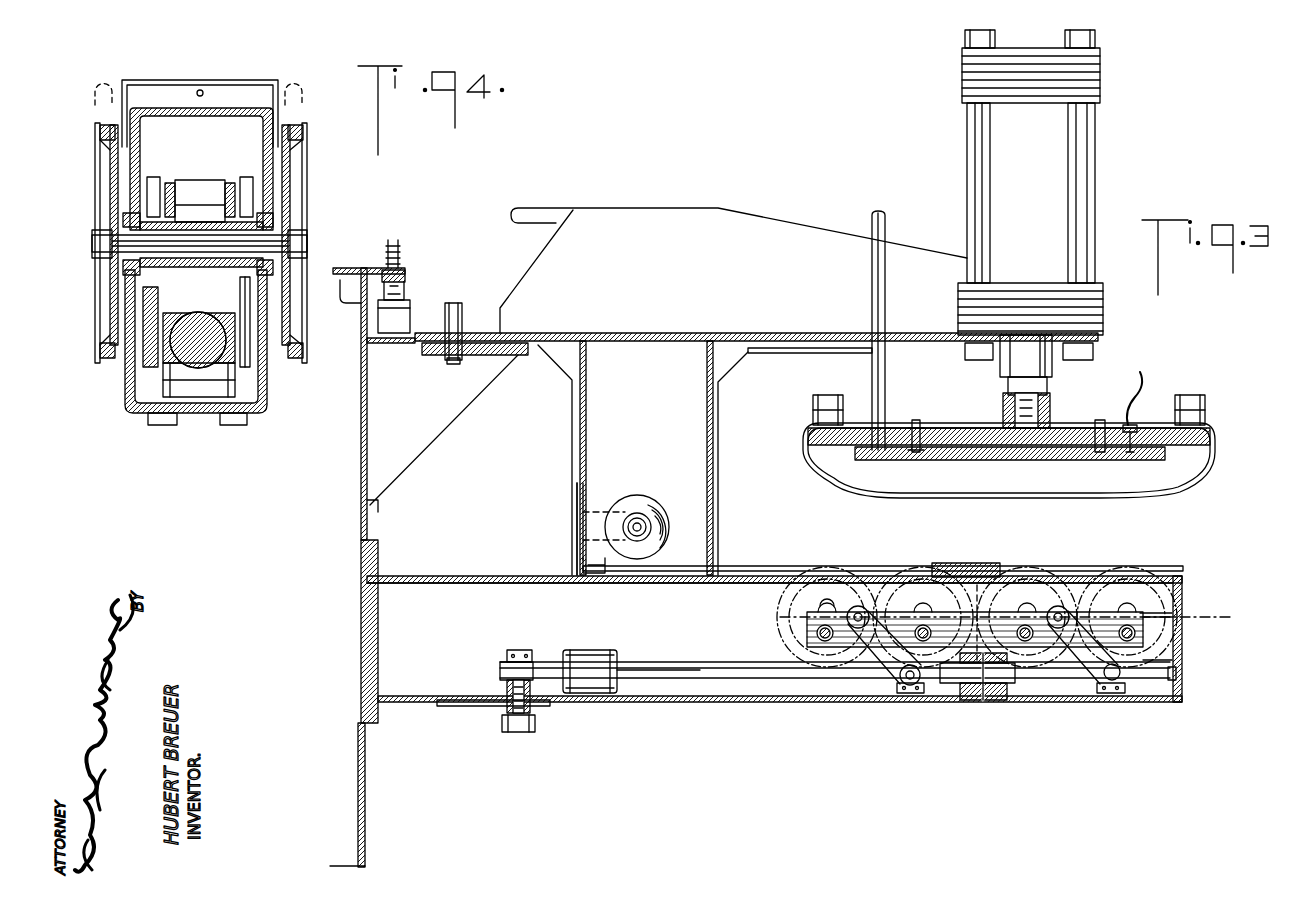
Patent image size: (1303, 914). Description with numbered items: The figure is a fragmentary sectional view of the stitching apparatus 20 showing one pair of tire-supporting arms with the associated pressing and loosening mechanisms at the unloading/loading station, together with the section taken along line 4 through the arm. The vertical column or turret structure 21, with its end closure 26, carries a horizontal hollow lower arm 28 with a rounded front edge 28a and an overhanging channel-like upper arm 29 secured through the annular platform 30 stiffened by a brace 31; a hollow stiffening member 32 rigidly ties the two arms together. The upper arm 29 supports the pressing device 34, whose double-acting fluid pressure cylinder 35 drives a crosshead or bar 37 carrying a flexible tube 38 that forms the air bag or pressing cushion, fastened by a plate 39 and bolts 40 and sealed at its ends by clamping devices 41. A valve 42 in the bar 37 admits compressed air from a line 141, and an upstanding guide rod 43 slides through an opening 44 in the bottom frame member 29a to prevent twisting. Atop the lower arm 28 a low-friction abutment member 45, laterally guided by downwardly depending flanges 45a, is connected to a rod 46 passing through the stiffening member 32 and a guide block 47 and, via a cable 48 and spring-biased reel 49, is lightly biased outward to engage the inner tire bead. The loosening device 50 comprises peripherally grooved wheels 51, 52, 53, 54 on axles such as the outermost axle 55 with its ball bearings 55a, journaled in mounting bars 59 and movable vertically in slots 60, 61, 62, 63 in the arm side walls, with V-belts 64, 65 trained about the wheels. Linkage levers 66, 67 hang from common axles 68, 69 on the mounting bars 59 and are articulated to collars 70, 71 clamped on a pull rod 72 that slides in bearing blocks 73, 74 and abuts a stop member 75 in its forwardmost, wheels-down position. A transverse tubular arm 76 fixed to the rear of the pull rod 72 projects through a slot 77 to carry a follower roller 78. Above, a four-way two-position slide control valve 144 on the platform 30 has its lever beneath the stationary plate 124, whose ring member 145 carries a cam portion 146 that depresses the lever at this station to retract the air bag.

In FIG. 3, the stitching apparatus 20 is at (797, 448).
In FIG. 3, the vertical column or turret structure 21 is at (366, 791).
In FIG. 3, the end closure 26 is at (346, 404).
In FIG. 4, the lower arm 28 is at (199, 416).
In FIG. 3, the lower arm 28 is at (748, 702).
In FIG. 3, the rounded front edge 28a is at (1184, 578).
In FIG. 3, the upper arm 29 is at (783, 231).
In FIG. 3, the bottom frame member 29a is at (652, 333).
In FIG. 3, the annular platform 30 is at (498, 354).
In FIG. 3, the brace 31 is at (410, 450).
In FIG. 3, the hollow stiffening member 32 is at (713, 488).
In FIG. 3, the pressing device 34 is at (1110, 161).
In FIG. 3, the double-acting fluid pressure cylinder 35 is at (1000, 156).
In FIG. 3, the crosshead or bar 37 is at (955, 426).
In FIG. 3, the flexible tube 38 is at (1202, 483).
In FIG. 3, the plate 39 is at (986, 456).
In FIG. 3, the bolt 40 is at (915, 422).
In FIG. 3, the clamping device 41 is at (812, 416).
In FIG. 3, the valve 42 is at (1136, 428).
In FIG. 3, the guide rod 43 is at (872, 213).
In FIG. 3, the opening 44 is at (860, 353).
In FIG. 4, the abutment member 45 is at (163, 80).
In FIG. 3, the abutment member 45 is at (945, 565).
In FIG. 4, the downwardly depending flange 45a is at (122, 123).
In FIG. 3, the rod 46 is at (848, 562).
In FIG. 3, the guide block 47 is at (597, 580).
In FIG. 3, the cable 48 is at (598, 554).
In FIG. 3, the spring-biased reel 49 is at (642, 496).
In FIG. 3, the loosening device 50 is at (740, 619).
In FIG. 4, the peripherally grooved wheel 51 is at (297, 192).
In FIG. 3, the peripherally grooved wheel 51 is at (1183, 661).
In FIG. 3, the peripherally grooved wheel 52 is at (1040, 690).
In FIG. 3, the peripherally grooved wheel 53 is at (950, 673).
In FIG. 3, the peripherally grooved wheel 54 is at (830, 692).
In FIG. 4, the axle 55 is at (92, 241).
In FIG. 4, the ball bearing 55a is at (275, 220).
In FIG. 3, the ball bearing 55a is at (1185, 618).
In FIG. 4, the mounting bar 59 is at (230, 185).
In FIG. 3, the mounting bar 59 is at (1090, 612).
In FIG. 4, the slot 60 is at (136, 156).
In FIG. 3, the slot 60 is at (1156, 613).
In FIG. 3, the slot 61 is at (1026, 600).
In FIG. 3, the slot 62 is at (906, 600).
In FIG. 3, the slot 63 is at (830, 600).
In FIG. 4, the V-belt 64 is at (295, 358).
In FIG. 3, the V-belt 64 is at (977, 585).
In FIG. 4, the V-belt 65 is at (106, 360).
In FIG. 4, the linkage lever 66 is at (150, 189).
In FIG. 3, the linkage lever 66 is at (1066, 656).
In FIG. 3, the linkage lever 67 is at (896, 673).
In FIG. 4, the common axle 68 is at (201, 203).
In FIG. 3, the common axle 68 is at (1058, 606).
In FIG. 3, the common axle 69 is at (859, 606).
In FIG. 4, the collar 70 is at (232, 365).
In FIG. 3, the collar 70 is at (1106, 692).
In FIG. 3, the collar 71 is at (910, 694).
In FIG. 4, the pull rod 72 is at (188, 362).
In FIG. 3, the pull rod 72 is at (702, 679).
In FIG. 4, the bearing block 73 is at (240, 402).
In FIG. 3, the bearing block 73 is at (984, 701).
In FIG. 3, the bearing block 74 is at (591, 692).
In FIG. 3, the set screw or stop member 75 is at (1177, 673).
In FIG. 3, the transverse tubular arm 76 is at (506, 691).
In FIG. 3, the slot 77 is at (448, 709).
In FIG. 3, the follower roller 78 is at (539, 733).
In FIG. 3, the horizontal plate 124 is at (347, 268).
In FIG. 3, the line 141 is at (1141, 386).
In FIG. 3, the 4/2-way slide or control valve 144 is at (393, 345).
In FIG. 3, the ring member 145 is at (404, 275).
In FIG. 3, the cam portion 146 is at (405, 290).
In FIG. 3, the section line 4— 4 is at (1160, 640).